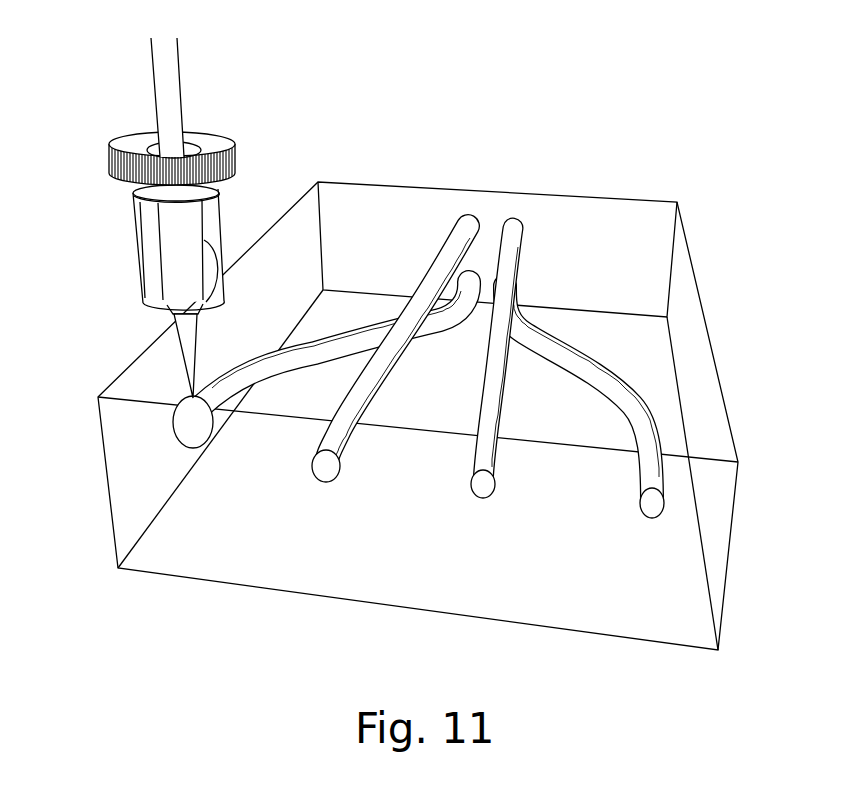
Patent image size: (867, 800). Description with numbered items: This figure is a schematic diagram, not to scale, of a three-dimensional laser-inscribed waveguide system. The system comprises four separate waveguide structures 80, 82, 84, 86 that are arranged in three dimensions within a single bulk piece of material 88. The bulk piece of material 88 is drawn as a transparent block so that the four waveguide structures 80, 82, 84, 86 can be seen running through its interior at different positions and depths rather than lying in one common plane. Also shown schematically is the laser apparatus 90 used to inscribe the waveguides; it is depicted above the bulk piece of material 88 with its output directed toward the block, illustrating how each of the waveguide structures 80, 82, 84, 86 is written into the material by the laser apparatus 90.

The waveguide structure 80 is at (338, 345).
The waveguide structure 82 is at (448, 258).
The waveguide structure 84 is at (638, 413).
The waveguide structure 86 is at (502, 457).
The bulk piece of material 88 is at (352, 603).
The laser apparatus 90 is at (137, 255).